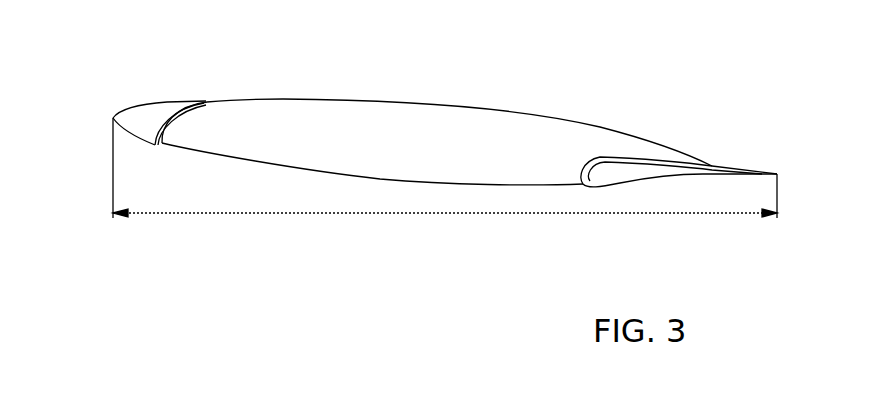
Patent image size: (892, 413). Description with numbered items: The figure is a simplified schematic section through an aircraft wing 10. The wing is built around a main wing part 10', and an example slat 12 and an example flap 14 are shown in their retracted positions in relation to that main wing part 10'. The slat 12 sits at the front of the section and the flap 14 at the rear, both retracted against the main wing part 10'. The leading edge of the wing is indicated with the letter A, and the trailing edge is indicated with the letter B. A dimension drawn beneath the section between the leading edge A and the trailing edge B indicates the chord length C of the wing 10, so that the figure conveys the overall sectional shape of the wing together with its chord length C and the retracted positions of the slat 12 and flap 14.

The aircraft wing 10 is at (459, 101).
The main wing part 10' is at (372, 110).
The slat 12 is at (121, 108).
The flap 14 is at (727, 159).
The leading edge A is at (112, 118).
The trailing edge B is at (779, 173).
The chord length C is at (445, 215).